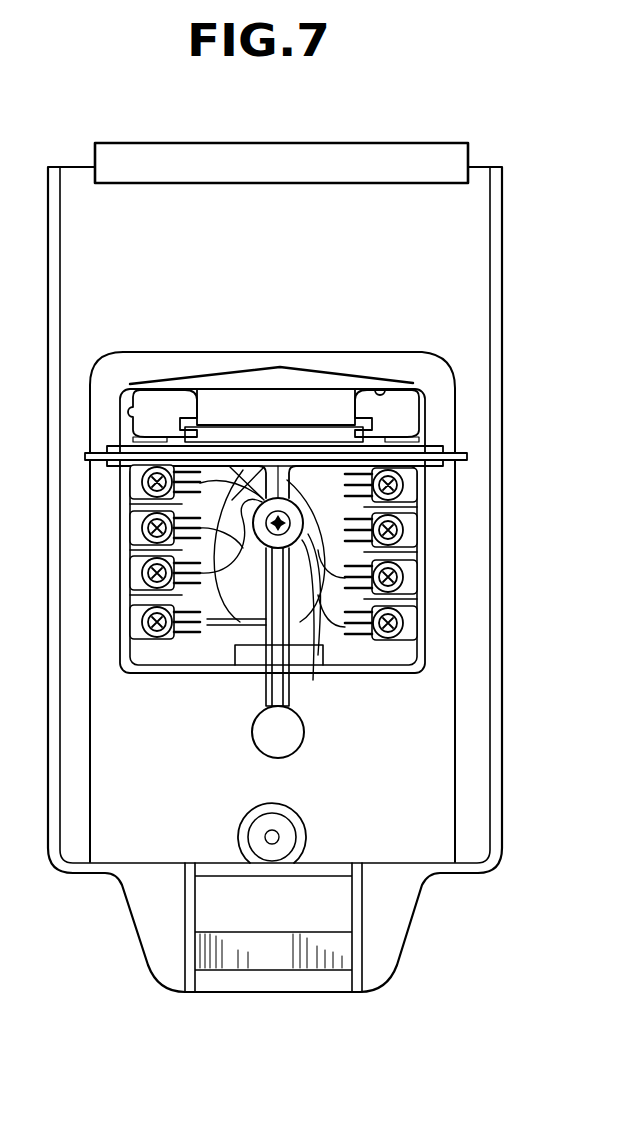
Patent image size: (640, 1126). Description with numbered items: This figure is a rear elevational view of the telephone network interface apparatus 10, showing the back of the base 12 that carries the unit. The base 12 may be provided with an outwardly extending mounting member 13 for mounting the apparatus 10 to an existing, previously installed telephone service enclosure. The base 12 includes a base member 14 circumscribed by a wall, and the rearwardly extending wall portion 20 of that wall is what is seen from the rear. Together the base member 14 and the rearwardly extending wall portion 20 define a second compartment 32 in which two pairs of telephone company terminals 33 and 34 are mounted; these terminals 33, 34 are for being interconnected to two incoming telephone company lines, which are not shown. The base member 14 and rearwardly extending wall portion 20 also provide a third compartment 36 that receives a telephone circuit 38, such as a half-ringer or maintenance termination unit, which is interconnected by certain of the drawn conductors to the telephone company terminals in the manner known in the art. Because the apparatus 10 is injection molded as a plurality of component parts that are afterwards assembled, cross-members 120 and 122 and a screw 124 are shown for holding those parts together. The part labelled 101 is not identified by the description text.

The telephone network interface apparatus 10 is at (51, 134).
The base 12 is at (11, 546).
The mounting member 13 is at (503, 205).
The base member 14 is at (133, 390).
The rearwardly extending wall portion 20 is at (133, 417).
The second compartment 32 is at (190, 655).
The telephone company terminals 33 is at (400, 630).
The telephone company terminals 34 is at (146, 622).
The third compartment 36 is at (161, 406).
The telephone circuit 38 is at (330, 390).
The top bar 101 is at (427, 143).
The cross-member 120 is at (227, 440).
The cross-member 122 is at (281, 448).
The screw 124 is at (313, 680).